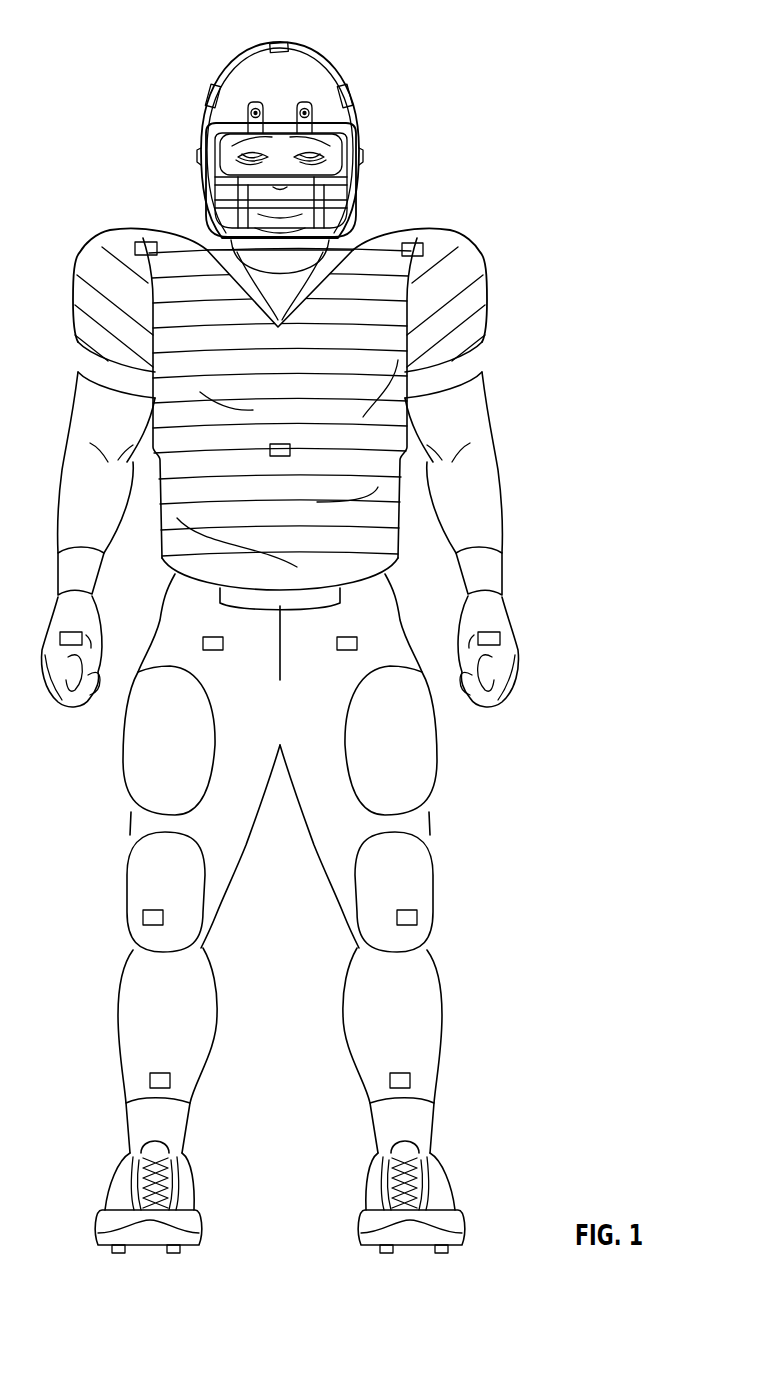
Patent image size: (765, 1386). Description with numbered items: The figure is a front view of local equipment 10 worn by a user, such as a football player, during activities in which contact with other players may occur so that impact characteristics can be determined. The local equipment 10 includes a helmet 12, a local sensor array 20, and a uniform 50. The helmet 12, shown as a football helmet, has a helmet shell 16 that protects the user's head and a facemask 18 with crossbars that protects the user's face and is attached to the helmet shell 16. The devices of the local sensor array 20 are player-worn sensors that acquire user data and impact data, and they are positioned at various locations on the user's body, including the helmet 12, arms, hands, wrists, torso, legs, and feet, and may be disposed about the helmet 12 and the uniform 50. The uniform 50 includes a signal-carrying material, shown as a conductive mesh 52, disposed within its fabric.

The local equipment 10 is at (104, 20).
The helmet 12 is at (364, 38).
The helmet shell 16 is at (245, 70).
The facemask 18 is at (358, 150).
The local sensor array 20 is at (290, 45).
The uniform 50 is at (440, 238).
The conductive mesh 52 is at (362, 337).